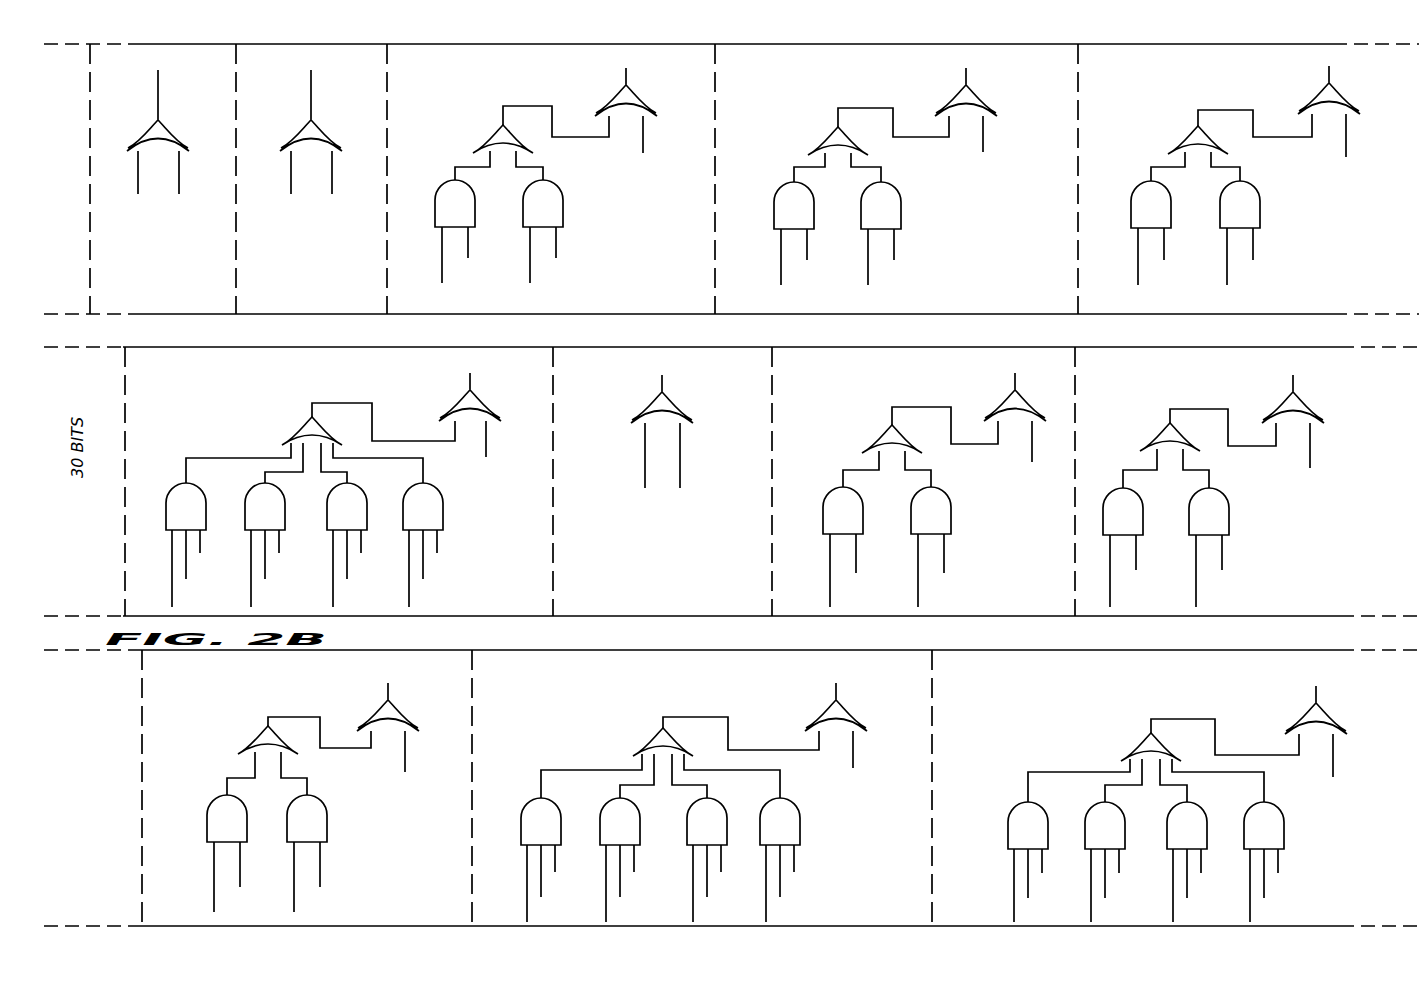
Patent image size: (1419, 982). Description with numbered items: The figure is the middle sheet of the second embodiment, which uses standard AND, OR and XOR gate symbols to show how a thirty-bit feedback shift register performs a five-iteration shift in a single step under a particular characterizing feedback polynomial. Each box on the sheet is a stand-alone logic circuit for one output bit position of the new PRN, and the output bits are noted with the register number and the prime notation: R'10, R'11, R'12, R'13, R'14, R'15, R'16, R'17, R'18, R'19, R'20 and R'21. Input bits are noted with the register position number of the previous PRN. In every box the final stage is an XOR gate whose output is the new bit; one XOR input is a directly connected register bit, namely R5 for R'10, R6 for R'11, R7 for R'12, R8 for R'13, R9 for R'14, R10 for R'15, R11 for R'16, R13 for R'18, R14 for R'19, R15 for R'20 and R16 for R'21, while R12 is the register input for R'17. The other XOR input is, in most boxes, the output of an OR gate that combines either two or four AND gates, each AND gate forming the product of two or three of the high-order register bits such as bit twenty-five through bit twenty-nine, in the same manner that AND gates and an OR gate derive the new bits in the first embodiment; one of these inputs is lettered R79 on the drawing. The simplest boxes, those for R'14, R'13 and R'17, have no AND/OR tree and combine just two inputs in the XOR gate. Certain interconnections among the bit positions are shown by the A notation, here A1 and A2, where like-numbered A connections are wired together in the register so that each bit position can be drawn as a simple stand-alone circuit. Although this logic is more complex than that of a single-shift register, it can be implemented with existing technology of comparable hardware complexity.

The output bit R10' R'10 is at (1329, 82).
The output bit R11' R'11 is at (966, 84).
The output bit R12' R'12 is at (626, 84).
The output bit R13' R'13 is at (311, 101).
The output bit R14' R'14 is at (158, 101).
The output bit R15' R'15 is at (1293, 391).
The output bit R16' R'16 is at (1015, 389).
The output bit R17' R'17 is at (662, 390).
The output bit R18' R'18 is at (470, 389).
The output bit R19' R'19 is at (1316, 702).
The output bit R20' R'20 is at (836, 699).
The output bit R21' R'21 is at (388, 699).
The input bit R5 is at (1360, 145).
The input bit R6 is at (997, 145).
The input bit R7 is at (658, 145).
The input bit R8 is at (337, 186).
The input bit R9 is at (185, 186).
The input bit R10 is at (1330, 450).
The input bit R11 is at (1051, 451).
The input bit R12 is at (699, 458).
The input bit R13 is at (506, 450).
The input bit R14 is at (1353, 763).
The input bit R15 is at (872, 761).
The input bit R16 is at (424, 761).
The register bit input (drawn as R79) to AND gate R79 is at (366, 560).
The interconnection A-1 A1 is at (626, 458).
The interconnection A-2 A2 is at (124, 186).